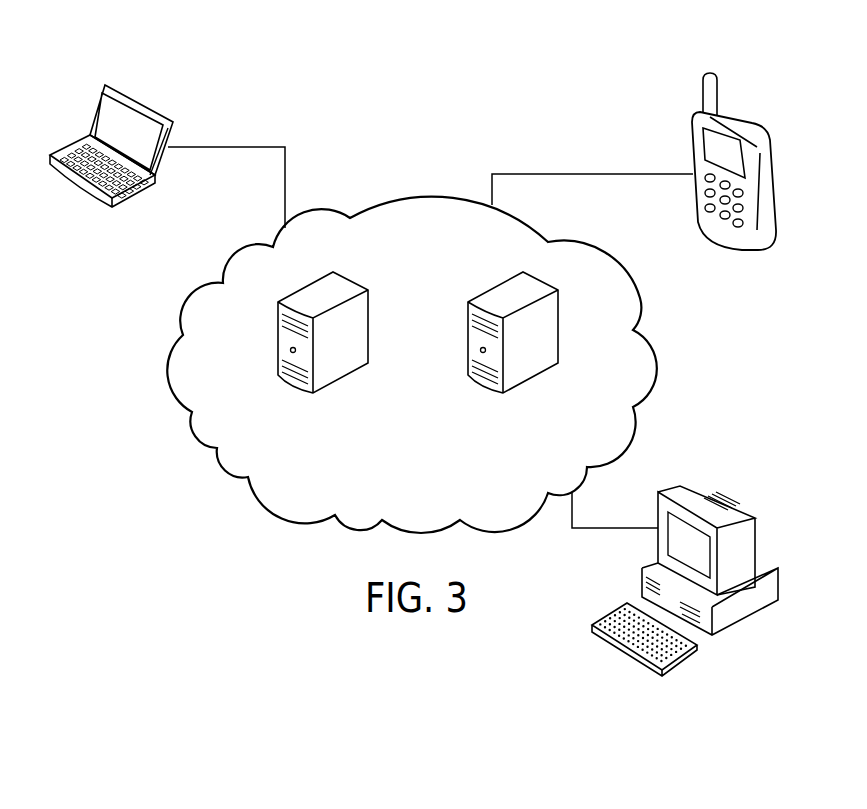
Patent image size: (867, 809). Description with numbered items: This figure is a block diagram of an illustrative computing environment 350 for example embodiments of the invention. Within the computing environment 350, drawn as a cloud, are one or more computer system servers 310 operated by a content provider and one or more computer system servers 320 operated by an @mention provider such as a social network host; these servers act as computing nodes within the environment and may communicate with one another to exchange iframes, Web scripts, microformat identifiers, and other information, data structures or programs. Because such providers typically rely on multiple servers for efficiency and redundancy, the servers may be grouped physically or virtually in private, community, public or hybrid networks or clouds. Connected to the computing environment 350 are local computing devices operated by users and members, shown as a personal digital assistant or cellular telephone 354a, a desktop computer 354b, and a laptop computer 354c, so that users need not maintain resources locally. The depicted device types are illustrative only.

The computing environment 350 is at (388, 198).
The computer system servers operated by an @mention provider 320 is at (353, 278).
The computer system servers operated by a content provider 310 is at (503, 278).
The personal digital assistant or cellular telephone 354a is at (757, 90).
The desktop computer 354b is at (733, 502).
The laptop computer 354c is at (153, 106).